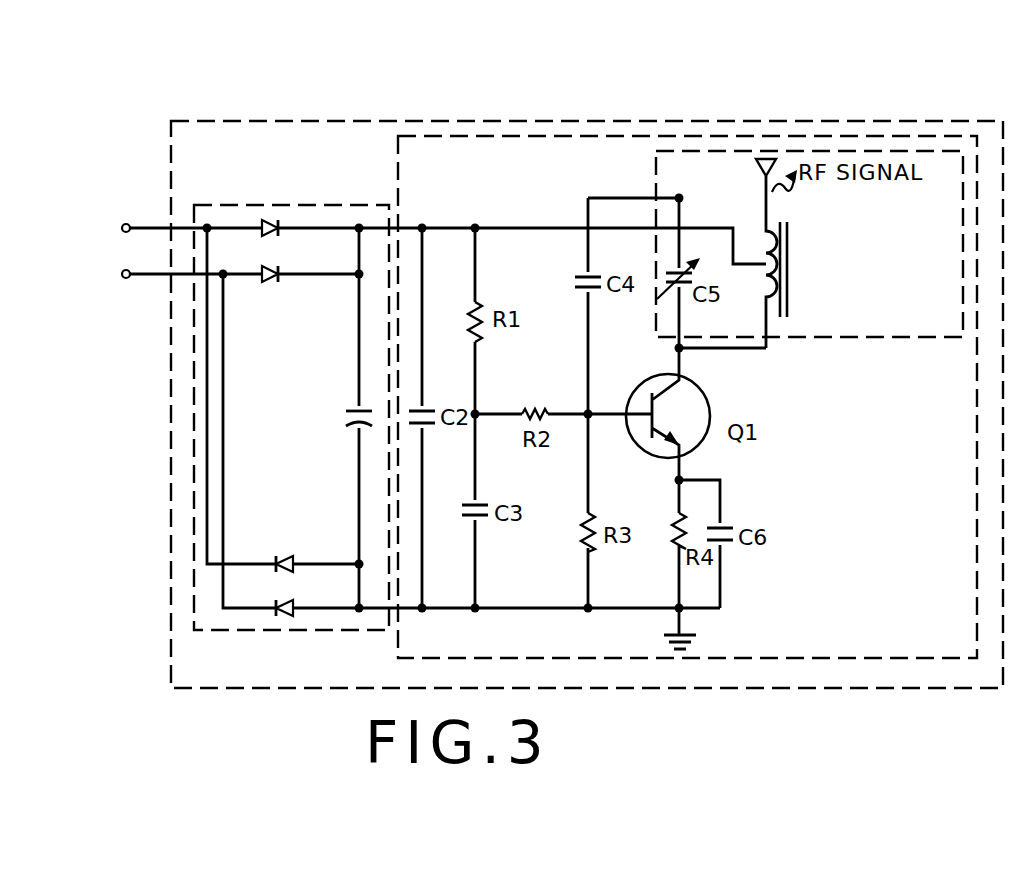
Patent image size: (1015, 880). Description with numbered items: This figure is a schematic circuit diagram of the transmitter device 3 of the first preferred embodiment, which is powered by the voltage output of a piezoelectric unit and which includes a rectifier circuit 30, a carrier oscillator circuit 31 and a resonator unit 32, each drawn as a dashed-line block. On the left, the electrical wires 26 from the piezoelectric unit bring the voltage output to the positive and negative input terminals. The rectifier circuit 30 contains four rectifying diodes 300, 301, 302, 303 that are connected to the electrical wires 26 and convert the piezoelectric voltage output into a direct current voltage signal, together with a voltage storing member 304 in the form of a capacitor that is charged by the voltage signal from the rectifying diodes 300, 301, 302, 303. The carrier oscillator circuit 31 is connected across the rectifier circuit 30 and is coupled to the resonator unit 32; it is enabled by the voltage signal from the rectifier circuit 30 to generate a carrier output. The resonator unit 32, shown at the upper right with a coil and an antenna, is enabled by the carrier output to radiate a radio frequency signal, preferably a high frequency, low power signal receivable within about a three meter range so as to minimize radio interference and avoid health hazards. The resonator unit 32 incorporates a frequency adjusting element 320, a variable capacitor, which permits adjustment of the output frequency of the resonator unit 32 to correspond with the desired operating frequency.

The transmitter device 3 is at (206, 103).
The electrical wires 26 is at (143, 273).
The rectifier circuit 30 is at (302, 210).
The rectifying diode 300 is at (262, 214).
The rectifying diode 301 is at (273, 284).
The rectifying diode 302 is at (280, 553).
The rectifying diode 303 is at (287, 625).
The voltage storing member 304 is at (352, 424).
The carrier oscillator circuit 31 is at (412, 647).
The resonator unit 32 is at (815, 307).
The frequency adjusting element 320 is at (708, 348).